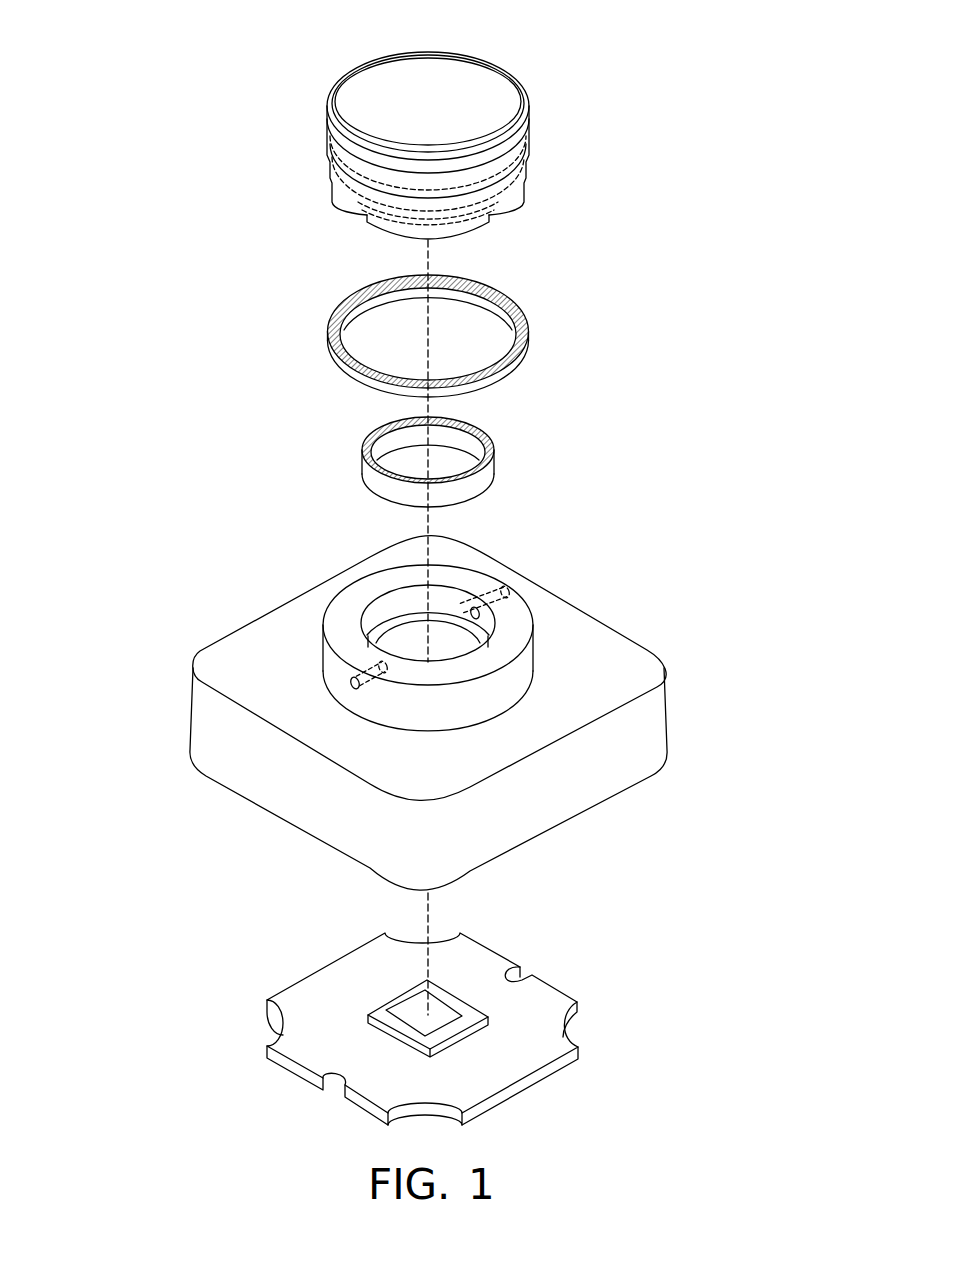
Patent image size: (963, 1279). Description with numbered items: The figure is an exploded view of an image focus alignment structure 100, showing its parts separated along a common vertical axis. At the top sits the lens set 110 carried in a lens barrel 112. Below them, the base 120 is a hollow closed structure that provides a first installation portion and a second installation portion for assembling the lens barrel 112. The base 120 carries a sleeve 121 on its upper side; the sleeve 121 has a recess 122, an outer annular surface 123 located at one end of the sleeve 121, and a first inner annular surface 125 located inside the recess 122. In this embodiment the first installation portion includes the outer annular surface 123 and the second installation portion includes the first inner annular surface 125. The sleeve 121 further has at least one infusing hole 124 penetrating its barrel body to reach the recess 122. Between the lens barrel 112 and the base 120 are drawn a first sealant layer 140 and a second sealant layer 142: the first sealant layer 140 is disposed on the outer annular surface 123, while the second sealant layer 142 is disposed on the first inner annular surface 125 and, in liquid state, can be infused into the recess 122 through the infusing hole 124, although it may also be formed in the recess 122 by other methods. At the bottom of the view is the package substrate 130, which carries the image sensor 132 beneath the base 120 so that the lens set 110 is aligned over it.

The image focus alignment structure 100 is at (57, 25).
The lens set 110 is at (482, 113).
The lens barrel 112 is at (530, 140).
The base 120 is at (615, 643).
The sleeve 121 is at (533, 617).
The recess 122 is at (400, 607).
The outer annular surface 123 is at (444, 577).
The infusing hole 124 is at (513, 595).
The first inner annular surface 125 is at (453, 605).
The package substrate 130 is at (533, 1003).
The image sensor 132 is at (440, 1017).
The first sealant layer 140 is at (528, 310).
The second sealant layer 142 is at (367, 455).